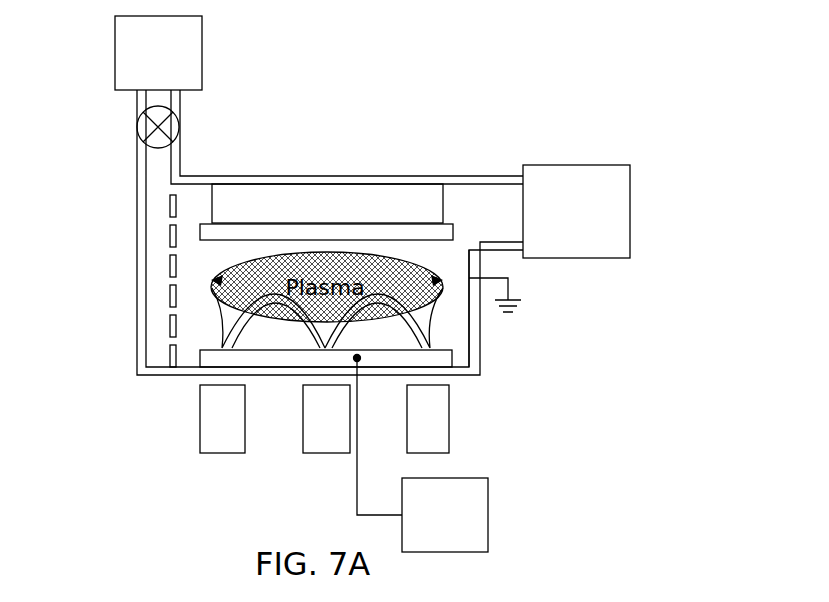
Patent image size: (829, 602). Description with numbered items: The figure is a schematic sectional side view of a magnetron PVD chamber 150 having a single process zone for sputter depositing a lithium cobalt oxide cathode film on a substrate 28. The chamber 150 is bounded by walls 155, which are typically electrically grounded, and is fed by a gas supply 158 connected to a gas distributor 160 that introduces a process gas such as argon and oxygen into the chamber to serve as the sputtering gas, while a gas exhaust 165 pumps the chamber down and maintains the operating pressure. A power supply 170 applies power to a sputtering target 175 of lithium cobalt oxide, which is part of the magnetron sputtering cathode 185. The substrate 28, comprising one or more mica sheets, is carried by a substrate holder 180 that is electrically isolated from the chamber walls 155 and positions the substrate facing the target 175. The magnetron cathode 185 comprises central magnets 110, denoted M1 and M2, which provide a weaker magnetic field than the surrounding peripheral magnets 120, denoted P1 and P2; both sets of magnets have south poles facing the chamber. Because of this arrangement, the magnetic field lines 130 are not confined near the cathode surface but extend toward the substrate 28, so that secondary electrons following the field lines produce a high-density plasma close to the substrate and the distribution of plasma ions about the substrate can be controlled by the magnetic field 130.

The magnetron PVD chamber 150 is at (118, 182).
The gas supply 158 is at (202, 33).
The substrate holder 180 is at (352, 221).
The substrate 28 is at (232, 242).
The gas distributor 160 is at (183, 285).
The magnetic field lines 130 is at (245, 325).
The magnetron sputtering cathode 185 is at (462, 352).
The sputtering target 175 is at (352, 343).
The chamber walls 155 is at (463, 256).
The gas exhaust 165 is at (650, 198).
The peripheral magnets 120 is at (200, 405).
The central magnets 110 is at (303, 405).
The power supply 170 is at (489, 497).